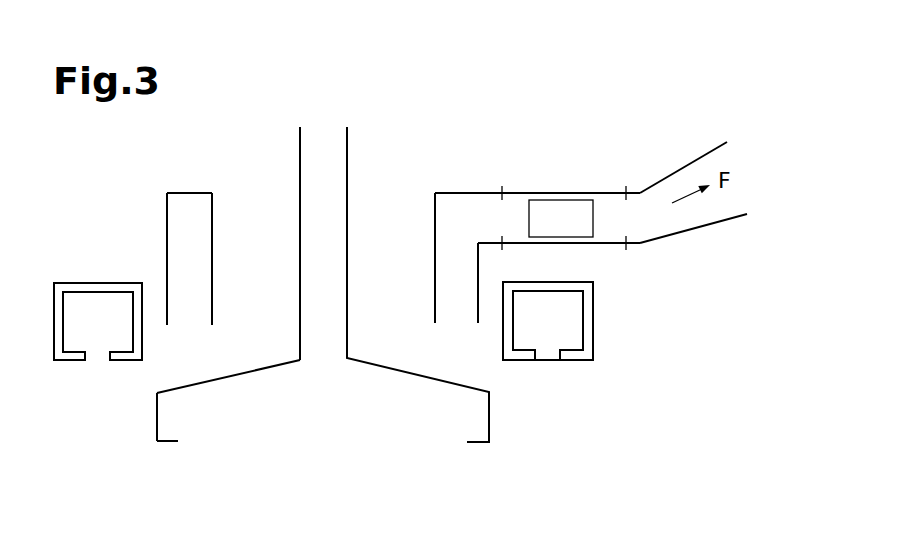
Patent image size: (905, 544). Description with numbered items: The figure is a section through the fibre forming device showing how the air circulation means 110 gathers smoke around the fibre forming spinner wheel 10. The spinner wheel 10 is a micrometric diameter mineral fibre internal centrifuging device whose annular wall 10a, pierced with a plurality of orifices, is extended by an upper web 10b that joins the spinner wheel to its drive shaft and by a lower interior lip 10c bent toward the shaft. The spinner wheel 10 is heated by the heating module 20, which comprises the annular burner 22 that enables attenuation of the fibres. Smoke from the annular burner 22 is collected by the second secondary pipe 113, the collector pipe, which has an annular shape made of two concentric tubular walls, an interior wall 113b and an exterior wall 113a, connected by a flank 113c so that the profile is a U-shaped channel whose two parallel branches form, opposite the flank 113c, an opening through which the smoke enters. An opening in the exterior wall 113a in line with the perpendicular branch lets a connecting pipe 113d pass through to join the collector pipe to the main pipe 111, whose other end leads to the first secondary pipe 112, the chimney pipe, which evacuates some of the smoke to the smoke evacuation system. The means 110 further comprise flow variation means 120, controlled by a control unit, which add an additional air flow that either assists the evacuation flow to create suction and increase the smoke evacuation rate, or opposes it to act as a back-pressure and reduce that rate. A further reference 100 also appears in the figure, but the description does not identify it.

The fibre forming spinner wheel 10 is at (299, 309).
The annular wall 10a is at (490, 417).
The web 10b is at (207, 382).
The interior lip 10c is at (167, 442).
The heating module 20 is at (564, 381).
The annular burner 22 is at (593, 333).
The clip 100 is at (422, 246).
The means for circulation of air 110 is at (606, 170).
The main pipe 111 is at (610, 244).
The first secondary pipe 112 is at (695, 240).
The second secondary pipe 113 is at (346, 252).
The exterior wall 113a is at (477, 297).
The interior wall 113b is at (432, 292).
The flank 113c is at (453, 192).
The connecting pipe 113d is at (483, 193).
The flow variation means 120 is at (585, 231).